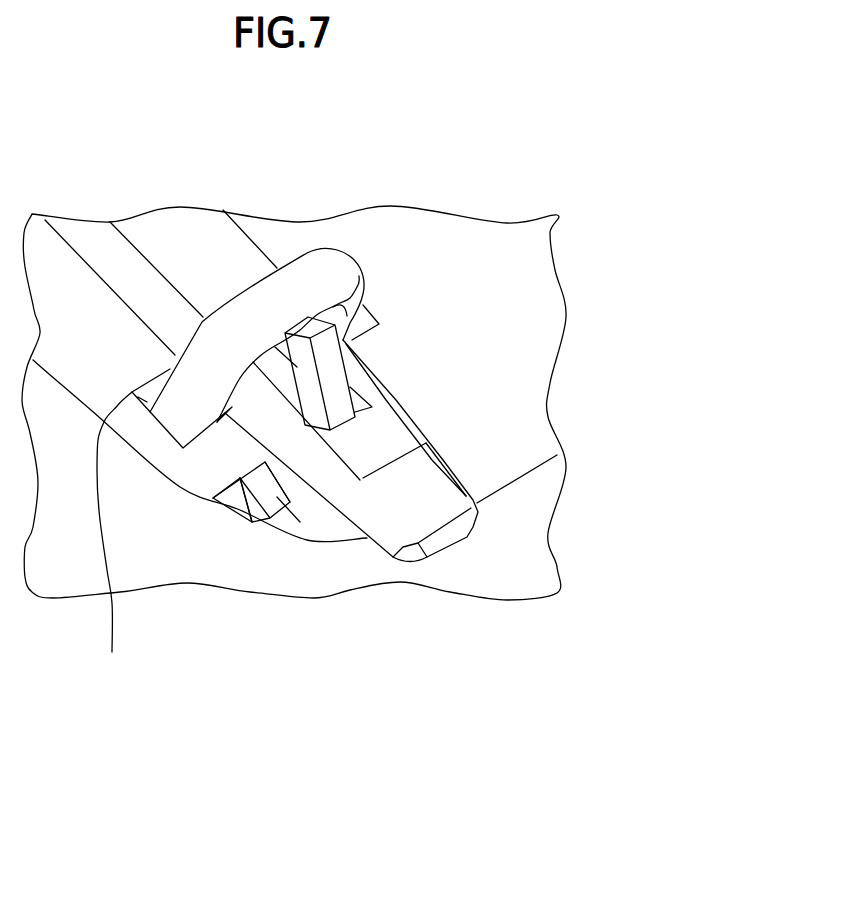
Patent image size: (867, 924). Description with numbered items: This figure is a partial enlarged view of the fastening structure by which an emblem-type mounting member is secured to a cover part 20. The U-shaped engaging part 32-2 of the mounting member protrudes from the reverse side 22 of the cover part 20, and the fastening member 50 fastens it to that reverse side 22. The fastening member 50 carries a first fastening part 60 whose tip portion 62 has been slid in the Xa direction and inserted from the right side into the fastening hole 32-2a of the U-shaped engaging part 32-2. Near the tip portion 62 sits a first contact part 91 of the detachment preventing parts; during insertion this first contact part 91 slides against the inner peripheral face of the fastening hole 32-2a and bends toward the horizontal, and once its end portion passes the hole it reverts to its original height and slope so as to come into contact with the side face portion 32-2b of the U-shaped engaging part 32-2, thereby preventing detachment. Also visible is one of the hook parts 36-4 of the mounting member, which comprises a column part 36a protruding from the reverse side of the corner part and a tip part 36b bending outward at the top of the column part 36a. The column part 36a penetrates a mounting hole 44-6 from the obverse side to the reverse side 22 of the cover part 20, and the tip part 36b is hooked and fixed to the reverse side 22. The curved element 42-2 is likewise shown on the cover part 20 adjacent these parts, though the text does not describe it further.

The cover part 20 is at (351, 512).
The reverse side 22 is at (338, 530).
The U-shaped engaging part 32-2 is at (260, 392).
The fastening hole 32-2a is at (271, 362).
The side face portion 32-2b is at (363, 283).
The hook part 36-4 is at (264, 573).
The column part 36a is at (248, 501).
The tip part 36b is at (288, 507).
The curved portion 42-2 is at (126, 526).
The mounting hole 44-6 is at (240, 490).
The fastening member 50 is at (294, 365).
The first fastening part 60 is at (193, 250).
The tip portion 62 is at (440, 512).
The first contact part 91 is at (335, 372).